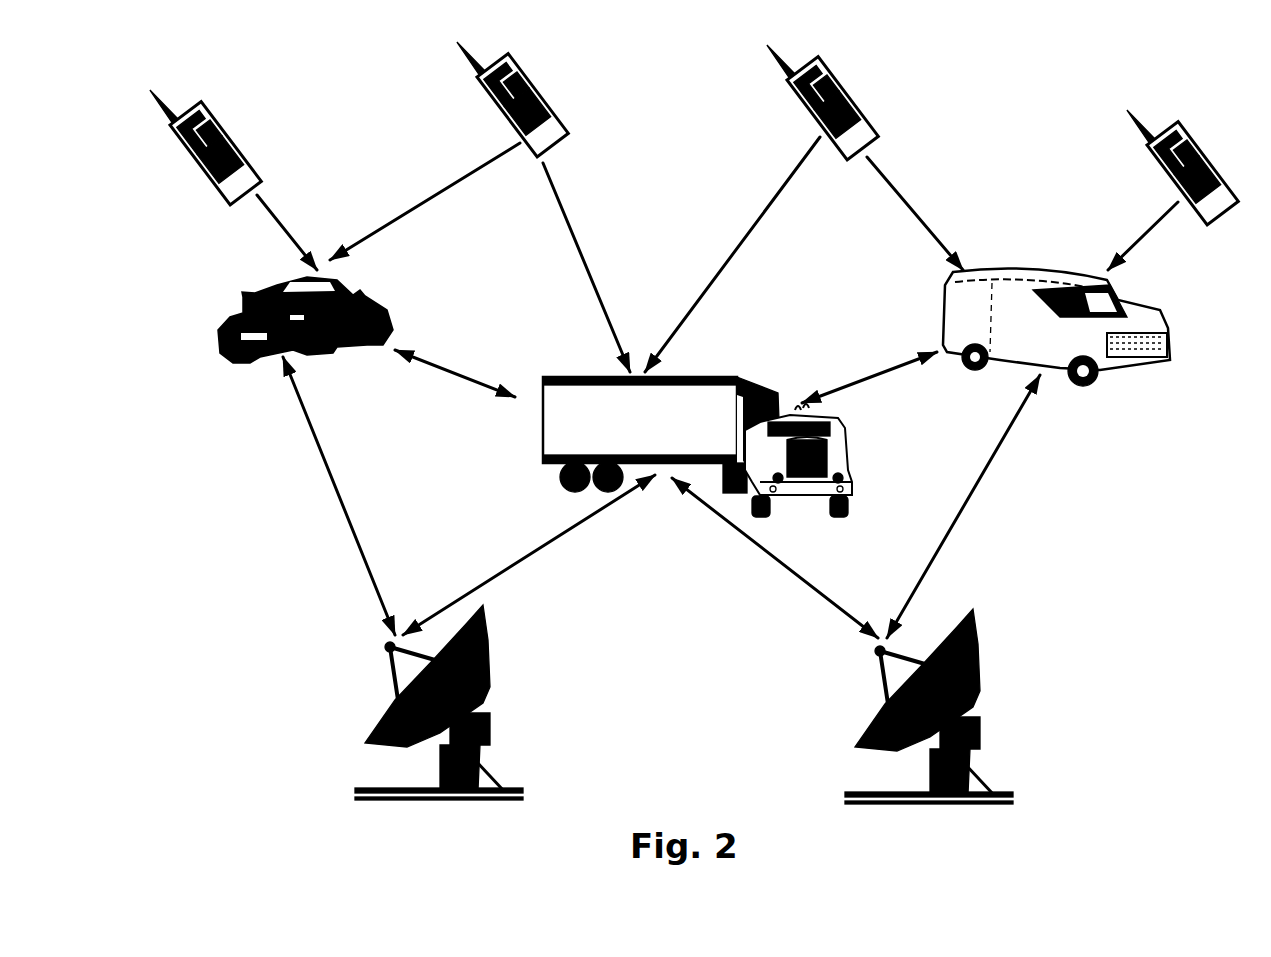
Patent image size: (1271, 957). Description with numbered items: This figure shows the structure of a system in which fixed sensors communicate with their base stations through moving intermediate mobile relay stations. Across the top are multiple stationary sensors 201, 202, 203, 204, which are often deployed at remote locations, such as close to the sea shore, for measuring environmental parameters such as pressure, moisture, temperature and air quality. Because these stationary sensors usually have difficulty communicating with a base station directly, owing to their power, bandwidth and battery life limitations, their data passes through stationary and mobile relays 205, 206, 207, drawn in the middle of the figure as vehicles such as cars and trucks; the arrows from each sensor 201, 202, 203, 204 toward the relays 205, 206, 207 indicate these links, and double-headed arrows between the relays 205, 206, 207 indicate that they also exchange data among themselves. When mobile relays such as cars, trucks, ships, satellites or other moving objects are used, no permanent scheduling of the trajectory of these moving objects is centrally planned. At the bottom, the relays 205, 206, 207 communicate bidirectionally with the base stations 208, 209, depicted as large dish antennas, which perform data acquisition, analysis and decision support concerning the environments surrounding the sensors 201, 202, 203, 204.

The stationary sensor 201 is at (255, 163).
The stationary sensor 202 is at (502, 110).
The stationary sensor 203 is at (808, 110).
The stationary sensor 204 is at (1160, 167).
The mobile relay 205 is at (240, 300).
The mobile relay 206 is at (543, 440).
The mobile relay 207 is at (947, 312).
The base station 208 is at (378, 716).
The base station 209 is at (870, 718).